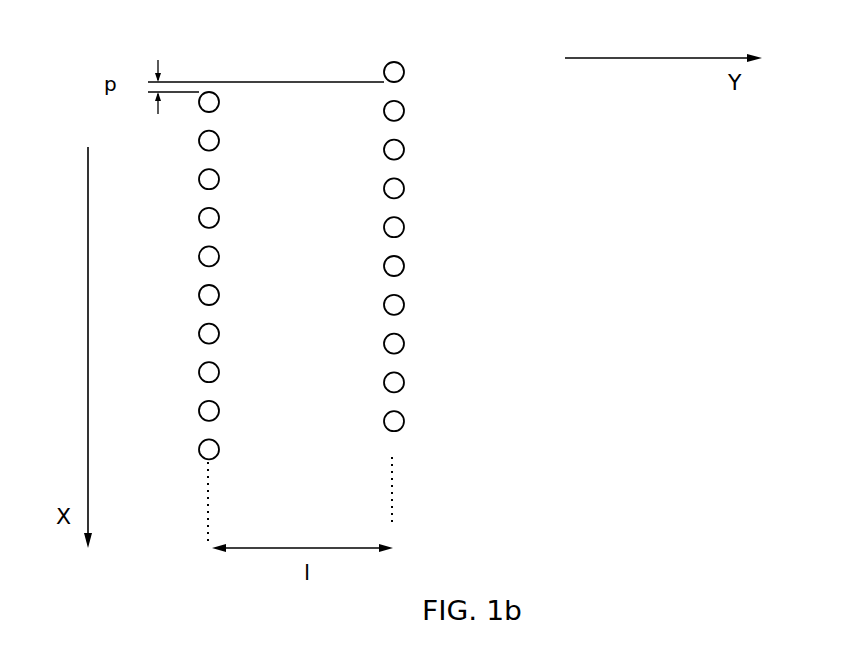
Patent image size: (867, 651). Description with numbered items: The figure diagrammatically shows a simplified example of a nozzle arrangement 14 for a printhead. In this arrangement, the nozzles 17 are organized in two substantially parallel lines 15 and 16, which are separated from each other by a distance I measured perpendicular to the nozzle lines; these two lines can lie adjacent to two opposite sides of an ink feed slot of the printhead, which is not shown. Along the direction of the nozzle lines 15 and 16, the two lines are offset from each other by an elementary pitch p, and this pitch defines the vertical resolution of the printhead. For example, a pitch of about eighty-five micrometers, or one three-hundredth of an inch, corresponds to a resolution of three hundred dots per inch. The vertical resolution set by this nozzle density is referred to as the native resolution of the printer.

The nozzle arrangement 14 is at (522, 272).
The first nozzle line 15 is at (184, 226).
The second nozzle line 16 is at (415, 188).
The nozzles 17 is at (405, 379).